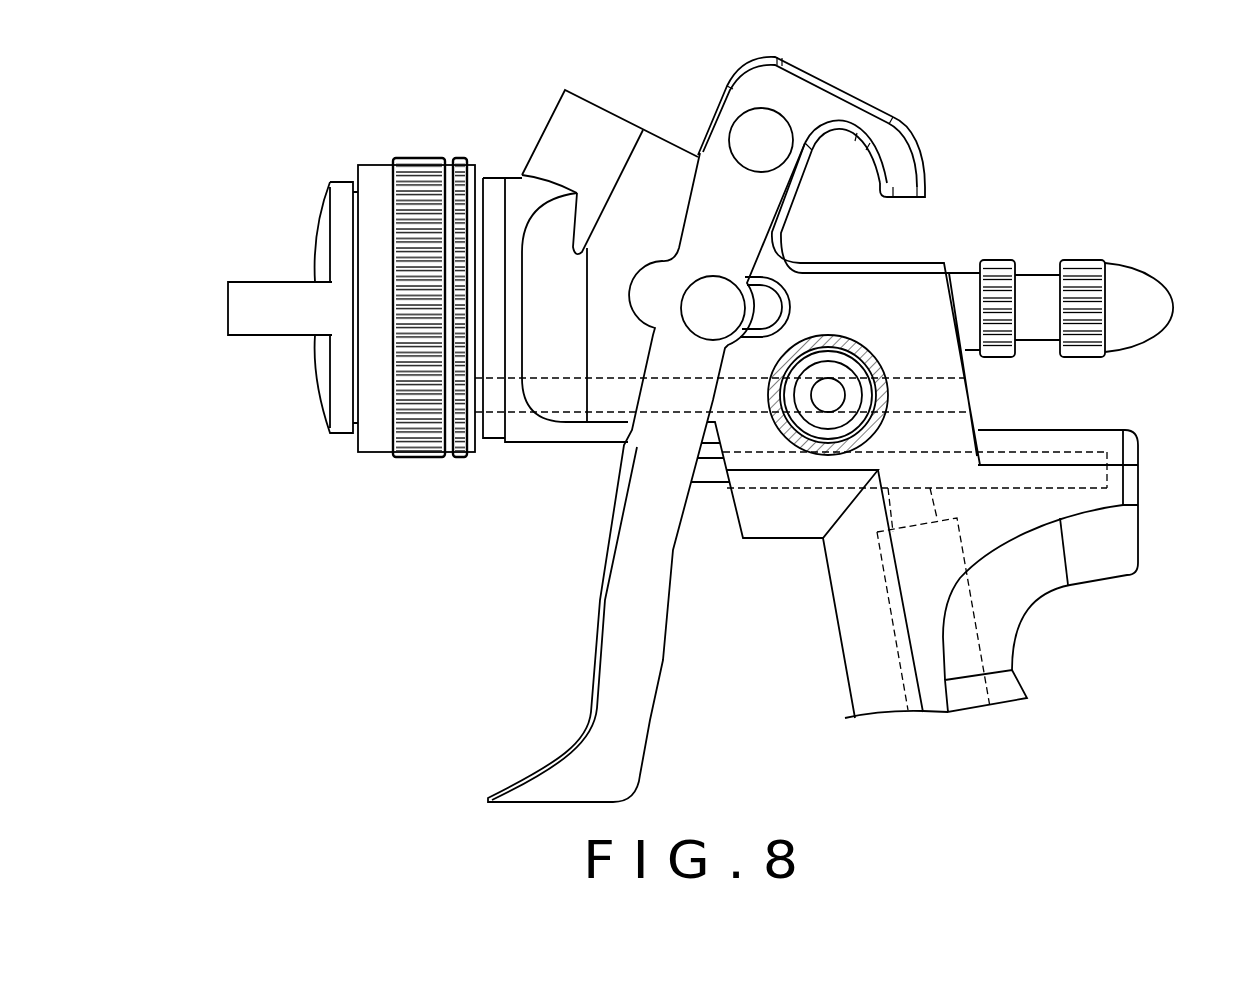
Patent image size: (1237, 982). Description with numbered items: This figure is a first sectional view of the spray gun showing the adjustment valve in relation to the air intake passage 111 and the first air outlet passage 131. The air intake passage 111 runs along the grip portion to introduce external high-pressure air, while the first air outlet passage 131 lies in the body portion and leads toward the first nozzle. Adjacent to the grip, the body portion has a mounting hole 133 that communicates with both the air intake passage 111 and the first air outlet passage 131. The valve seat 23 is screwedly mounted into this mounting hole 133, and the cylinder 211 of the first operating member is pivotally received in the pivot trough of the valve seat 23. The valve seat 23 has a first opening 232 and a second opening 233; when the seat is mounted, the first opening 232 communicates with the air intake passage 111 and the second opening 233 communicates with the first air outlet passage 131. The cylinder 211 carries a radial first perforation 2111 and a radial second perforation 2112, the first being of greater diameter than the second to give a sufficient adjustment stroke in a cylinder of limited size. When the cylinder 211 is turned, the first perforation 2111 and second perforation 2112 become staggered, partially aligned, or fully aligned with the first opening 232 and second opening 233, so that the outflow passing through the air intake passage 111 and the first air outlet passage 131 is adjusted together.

The air intake passage 111 is at (893, 637).
The first air outlet passage 131 is at (610, 413).
The mounting hole 133 is at (836, 350).
The cylinder 211 is at (888, 397).
The first perforation 2111 is at (808, 433).
The second perforation 2112 is at (777, 405).
The valve seat 23 is at (861, 481).
The first opening 232 is at (830, 450).
The second opening 233 is at (775, 393).